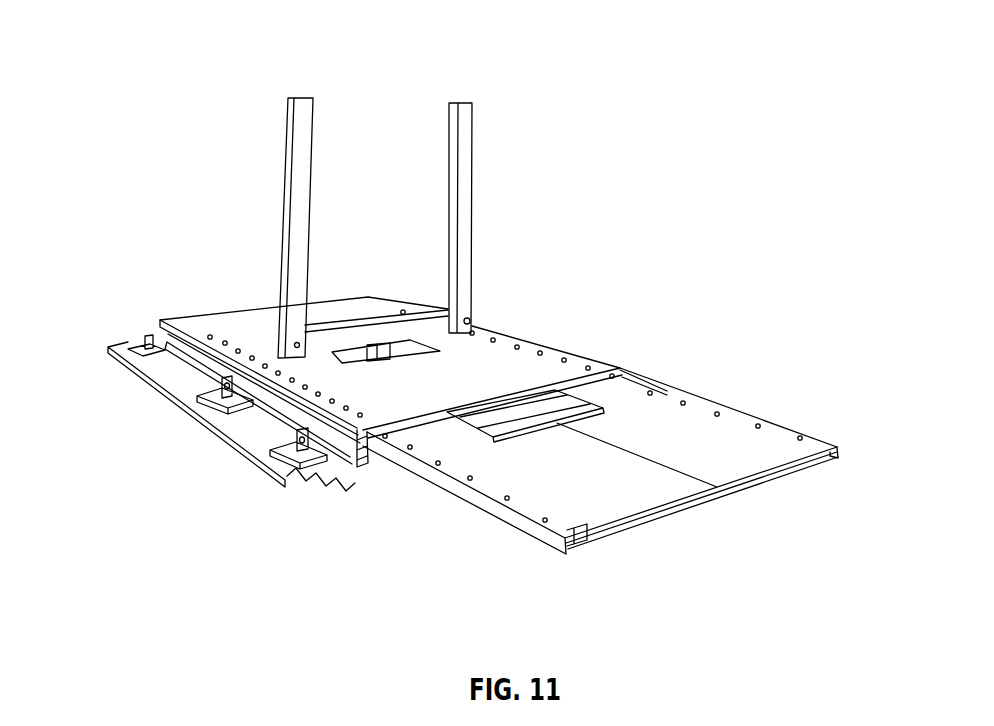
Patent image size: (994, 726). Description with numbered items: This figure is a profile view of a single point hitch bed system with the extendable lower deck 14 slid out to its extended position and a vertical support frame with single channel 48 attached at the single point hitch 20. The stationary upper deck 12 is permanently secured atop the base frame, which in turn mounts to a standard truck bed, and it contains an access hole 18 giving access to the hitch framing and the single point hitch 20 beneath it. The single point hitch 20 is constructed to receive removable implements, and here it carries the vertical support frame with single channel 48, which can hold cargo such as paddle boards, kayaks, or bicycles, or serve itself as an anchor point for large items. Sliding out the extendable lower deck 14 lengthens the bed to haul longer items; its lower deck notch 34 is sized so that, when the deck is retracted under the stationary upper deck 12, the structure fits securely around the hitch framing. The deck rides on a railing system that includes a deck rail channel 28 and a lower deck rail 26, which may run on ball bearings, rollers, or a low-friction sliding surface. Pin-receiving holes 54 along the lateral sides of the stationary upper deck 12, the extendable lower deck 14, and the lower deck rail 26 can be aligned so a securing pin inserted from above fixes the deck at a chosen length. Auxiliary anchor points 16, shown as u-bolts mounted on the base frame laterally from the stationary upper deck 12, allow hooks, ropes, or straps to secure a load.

The stationary upper deck 12 is at (227, 312).
The extendable lower deck 14 is at (745, 433).
The auxiliary anchor points 16 is at (128, 338).
The access hole 18 is at (428, 332).
The single point hitch 20 is at (350, 363).
The lower deck rail 26 is at (850, 470).
The deck rail channel 28 is at (363, 463).
The lower deck notch 34 is at (548, 400).
The vertical support frame with single channel 48 is at (469, 96).
The pin-receiving holes 54 is at (572, 527).